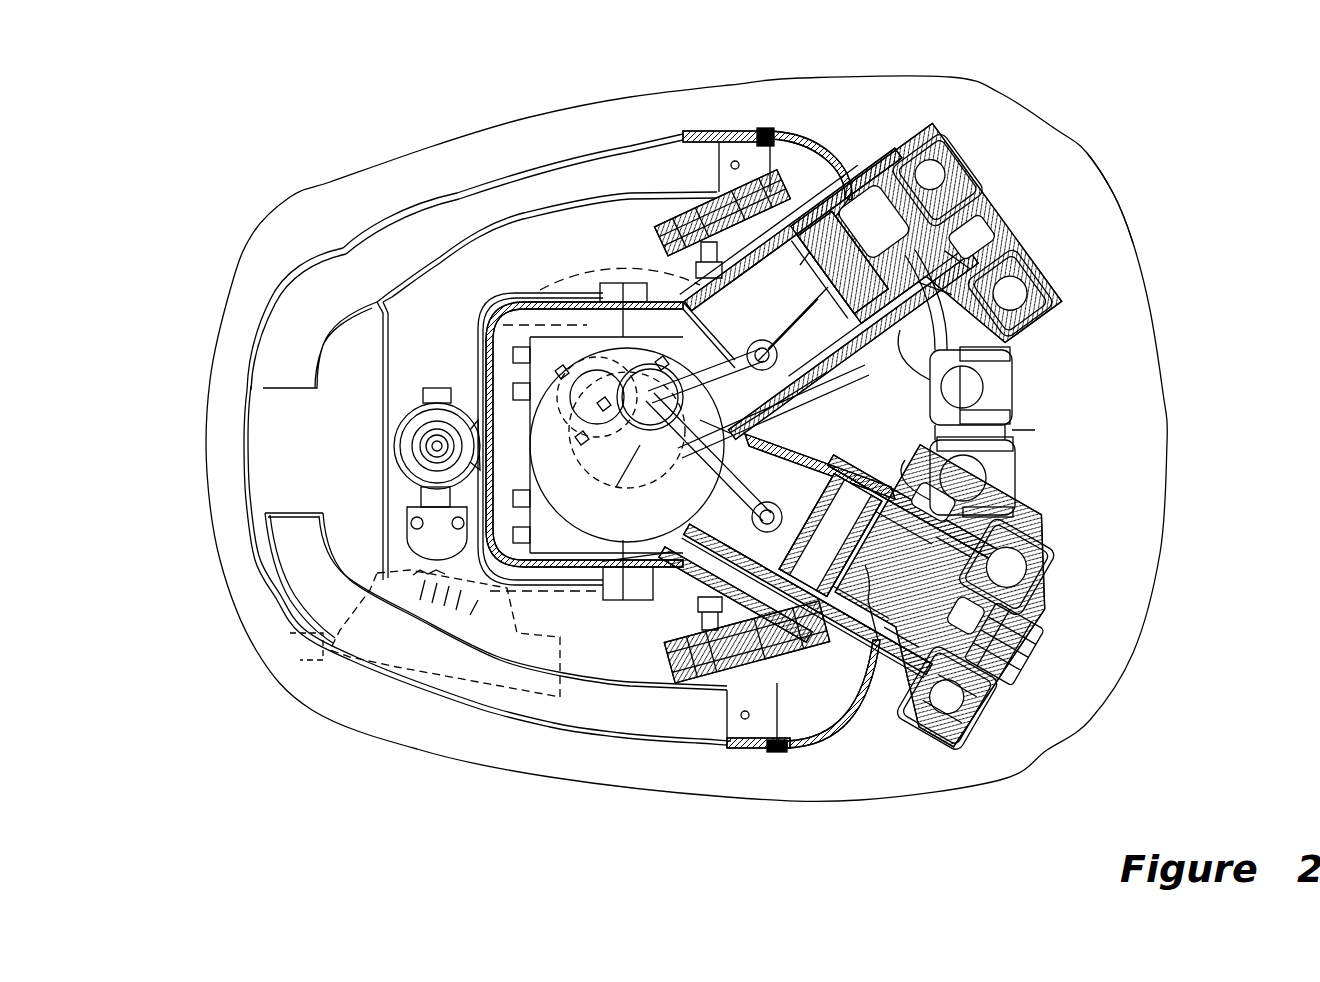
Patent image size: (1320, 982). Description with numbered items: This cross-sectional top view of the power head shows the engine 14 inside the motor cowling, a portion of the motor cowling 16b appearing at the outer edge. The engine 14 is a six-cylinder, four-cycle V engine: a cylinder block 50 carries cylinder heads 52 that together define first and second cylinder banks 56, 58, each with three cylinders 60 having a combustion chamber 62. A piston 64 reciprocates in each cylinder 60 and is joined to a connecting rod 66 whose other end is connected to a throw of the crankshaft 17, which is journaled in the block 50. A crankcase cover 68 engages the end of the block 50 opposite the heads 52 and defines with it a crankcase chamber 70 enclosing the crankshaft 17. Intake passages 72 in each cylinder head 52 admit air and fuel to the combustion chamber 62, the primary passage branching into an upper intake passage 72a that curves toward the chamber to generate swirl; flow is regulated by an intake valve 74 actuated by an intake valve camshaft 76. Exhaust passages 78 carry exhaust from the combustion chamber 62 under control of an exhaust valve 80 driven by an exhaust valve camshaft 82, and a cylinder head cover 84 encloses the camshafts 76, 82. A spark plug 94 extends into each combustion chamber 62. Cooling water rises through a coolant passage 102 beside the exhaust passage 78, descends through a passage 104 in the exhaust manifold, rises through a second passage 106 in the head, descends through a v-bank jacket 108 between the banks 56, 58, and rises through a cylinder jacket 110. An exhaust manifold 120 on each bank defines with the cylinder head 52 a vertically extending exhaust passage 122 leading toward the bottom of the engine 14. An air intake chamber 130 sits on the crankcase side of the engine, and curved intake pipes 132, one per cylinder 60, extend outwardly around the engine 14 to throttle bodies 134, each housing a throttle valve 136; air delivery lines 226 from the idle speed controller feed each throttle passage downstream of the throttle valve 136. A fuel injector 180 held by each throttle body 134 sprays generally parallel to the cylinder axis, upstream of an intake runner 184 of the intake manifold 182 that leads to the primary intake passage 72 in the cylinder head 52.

The engine 14 is at (575, 300).
The cowling assembly 16b is at (1087, 143).
The crankshaft 17 is at (657, 433).
The cylinder block 50 is at (635, 285).
The cylinder head 52 is at (870, 180).
The first cylinder bank 56 is at (908, 120).
The second cylinder bank 58 is at (903, 713).
The cylinder 60 is at (813, 490).
The combustion chamber 62 is at (833, 470).
The piston 64 is at (737, 210).
The connecting rod 66 is at (683, 457).
The crankcase cover 68 is at (490, 337).
The crankcase chamber 70 is at (540, 298).
The intake passage 72 is at (847, 663).
The upper intake passage 72a is at (853, 707).
The intake valve 74 is at (850, 578).
The intake valve camshaft 76 is at (1015, 290).
The exhaust passage 78 is at (975, 477).
The exhaust valve 80 is at (867, 547).
The exhaust valve camshaft 82 is at (1015, 583).
The cylinder head cover 84 is at (952, 700).
The spark plug 94 is at (437, 400).
The coolant passage 102 is at (1000, 430).
The exhaust manifold passage 104 is at (1010, 487).
The second passage 106 is at (1020, 607).
The v-bank jacket 108 is at (783, 537).
The cylinder jacket 110 is at (823, 372).
The exhaust manifold 120 is at (1020, 453).
The exhaust passage 122 is at (965, 385).
The air intake chamber 130 is at (210, 452).
The intake pipe 132 is at (523, 167).
The throttle body 134 is at (727, 132).
The throttle valve 136 is at (737, 160).
The fuel injector 180 is at (690, 215).
The intake manifold 182 is at (785, 120).
The intake runner 184 is at (775, 132).
The air delivery line 226 is at (840, 190).